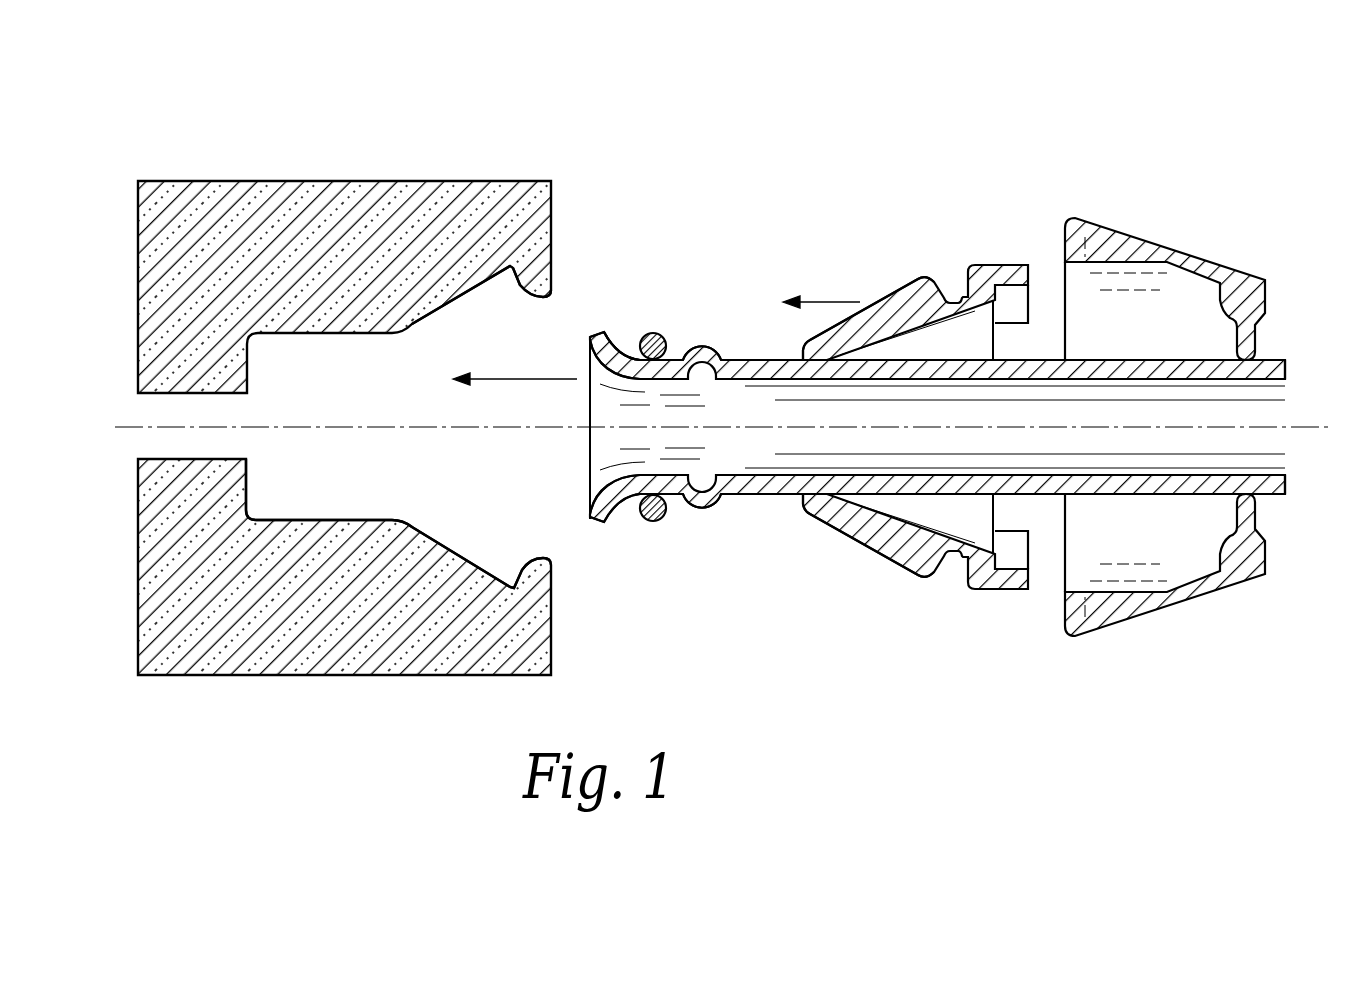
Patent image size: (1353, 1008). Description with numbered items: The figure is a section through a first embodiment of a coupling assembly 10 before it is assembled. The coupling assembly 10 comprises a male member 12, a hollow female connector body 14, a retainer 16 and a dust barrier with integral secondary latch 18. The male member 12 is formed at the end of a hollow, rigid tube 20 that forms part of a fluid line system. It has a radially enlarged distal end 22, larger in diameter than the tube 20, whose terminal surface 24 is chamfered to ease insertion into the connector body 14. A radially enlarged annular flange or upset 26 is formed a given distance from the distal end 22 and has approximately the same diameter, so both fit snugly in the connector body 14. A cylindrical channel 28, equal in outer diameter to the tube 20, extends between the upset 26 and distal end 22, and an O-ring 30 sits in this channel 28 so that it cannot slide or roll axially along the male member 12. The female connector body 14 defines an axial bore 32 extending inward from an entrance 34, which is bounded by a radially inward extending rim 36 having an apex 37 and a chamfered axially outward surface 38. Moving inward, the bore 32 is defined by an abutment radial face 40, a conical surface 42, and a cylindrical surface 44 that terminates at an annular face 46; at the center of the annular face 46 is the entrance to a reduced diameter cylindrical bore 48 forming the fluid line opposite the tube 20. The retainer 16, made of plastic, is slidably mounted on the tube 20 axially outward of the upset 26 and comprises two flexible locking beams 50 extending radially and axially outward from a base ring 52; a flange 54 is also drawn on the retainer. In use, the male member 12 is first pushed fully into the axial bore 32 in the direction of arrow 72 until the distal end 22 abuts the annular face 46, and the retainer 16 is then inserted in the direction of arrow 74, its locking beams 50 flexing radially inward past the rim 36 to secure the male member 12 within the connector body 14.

The coupling assembly 10 is at (761, 205).
The male member 12 is at (741, 360).
The female connector body 14 is at (437, 177).
The retainer 16 is at (904, 281).
The dust barrier with integral secondary latch 18 is at (1174, 242).
The tube 20 is at (1287, 362).
The distal end 22 is at (614, 350).
The terminal surface 24 is at (591, 334).
The upset 26 is at (709, 335).
The cylindrical channel 28 is at (680, 505).
The O-ring 30 is at (659, 523).
The axial bore 32 is at (361, 403).
The entrance 34 is at (545, 310).
The rim 36 is at (542, 558).
The apex 37 is at (540, 296).
The axially outward surface 38 is at (560, 548).
The abutment radial face 40 is at (525, 563).
The conical surface 42 is at (422, 540).
The cylindrical surface 44 is at (330, 520).
The annular face 46 is at (250, 487).
The reduced diameter cylindrical bore 48 is at (178, 456).
The locking beams 50 is at (875, 297).
The base ring 52 is at (803, 502).
The flange 54 is at (1012, 264).
The arrow 72 is at (535, 378).
The arrow 74 is at (830, 301).